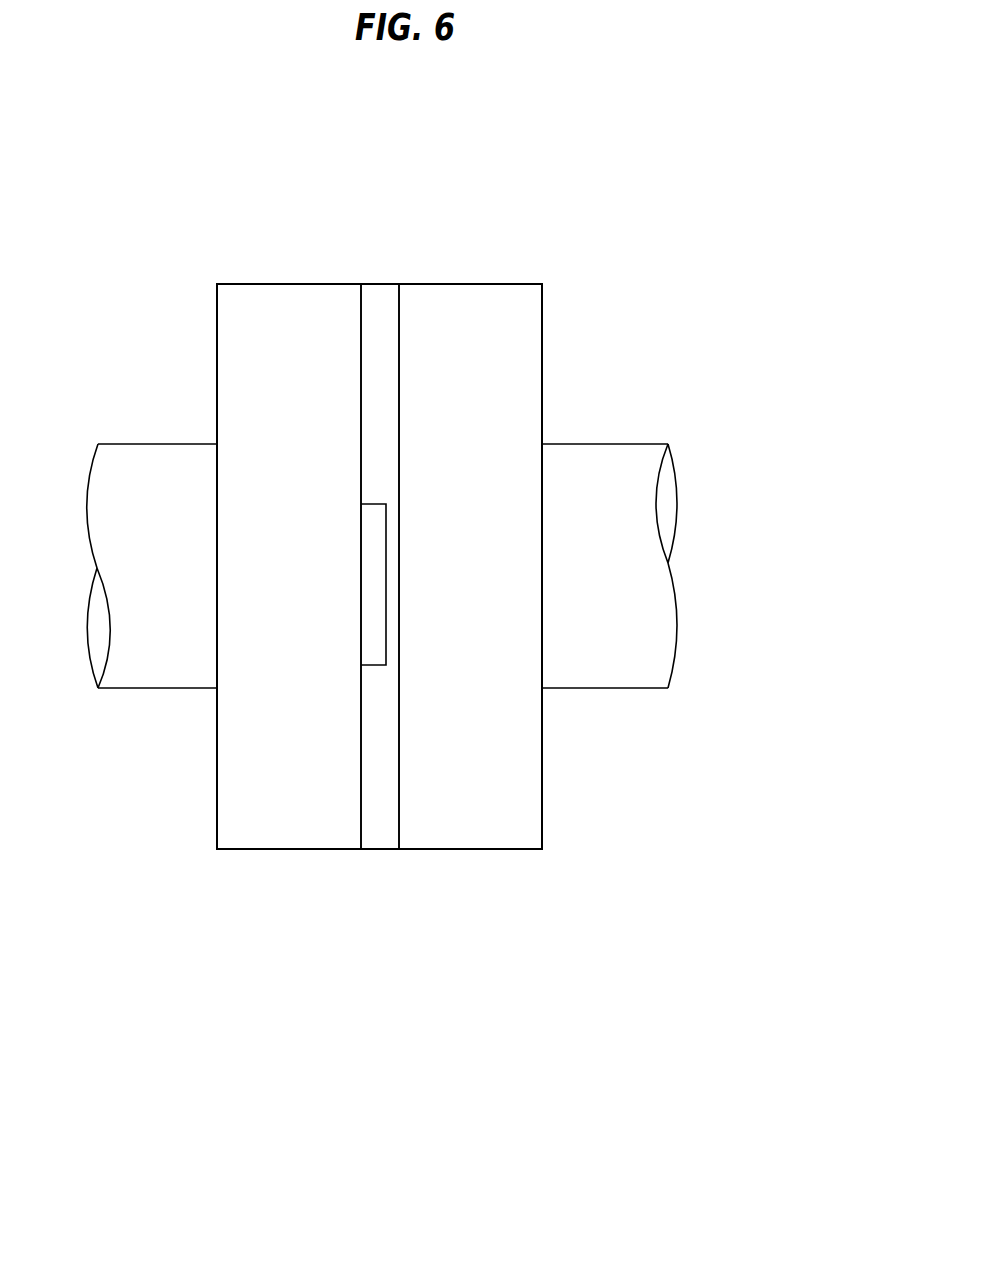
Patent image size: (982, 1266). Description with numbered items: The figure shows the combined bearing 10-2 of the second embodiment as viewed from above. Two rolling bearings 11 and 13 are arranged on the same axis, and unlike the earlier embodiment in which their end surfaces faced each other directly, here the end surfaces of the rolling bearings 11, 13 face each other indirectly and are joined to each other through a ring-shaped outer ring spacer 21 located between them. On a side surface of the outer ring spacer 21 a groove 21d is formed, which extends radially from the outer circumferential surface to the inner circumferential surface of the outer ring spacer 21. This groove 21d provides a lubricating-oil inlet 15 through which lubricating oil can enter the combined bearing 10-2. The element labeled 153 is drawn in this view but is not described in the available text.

The combined bearing 10-2 is at (572, 203).
The rolling bearing 11 is at (277, 849).
The outer ring spacer 21 is at (381, 849).
The rolling bearing 13 is at (477, 849).
The groove 21d is at (386, 538).
The lubricating-oil inlet 15 is at (375, 575).
The shaft 153 is at (139, 688).